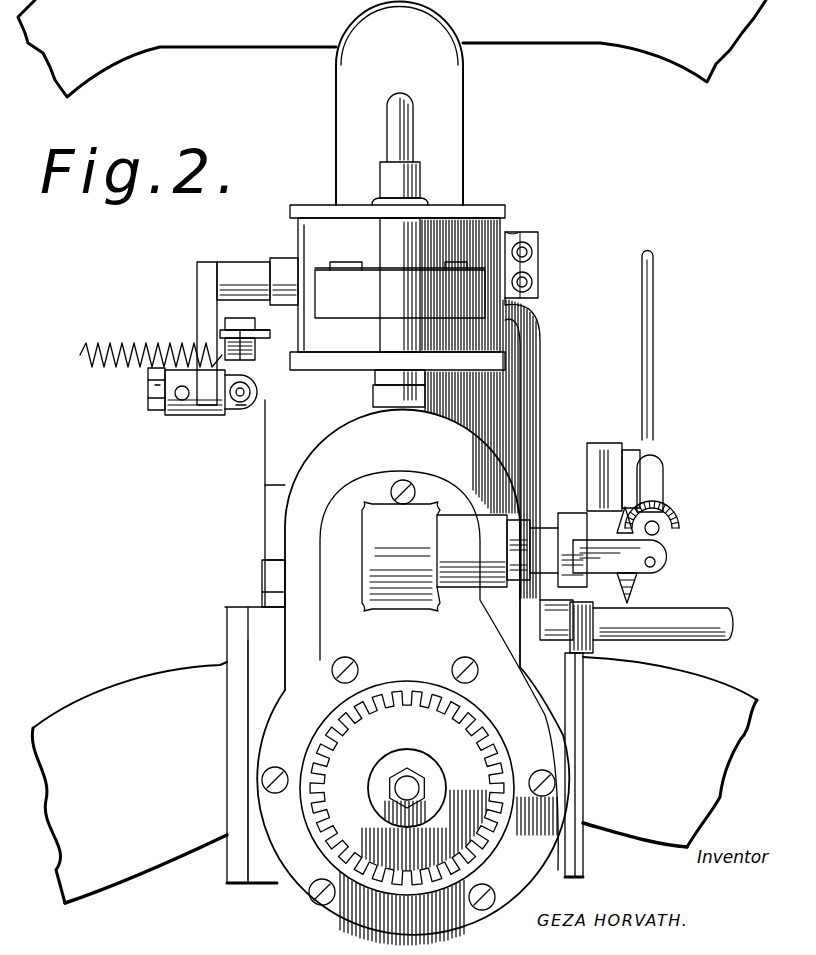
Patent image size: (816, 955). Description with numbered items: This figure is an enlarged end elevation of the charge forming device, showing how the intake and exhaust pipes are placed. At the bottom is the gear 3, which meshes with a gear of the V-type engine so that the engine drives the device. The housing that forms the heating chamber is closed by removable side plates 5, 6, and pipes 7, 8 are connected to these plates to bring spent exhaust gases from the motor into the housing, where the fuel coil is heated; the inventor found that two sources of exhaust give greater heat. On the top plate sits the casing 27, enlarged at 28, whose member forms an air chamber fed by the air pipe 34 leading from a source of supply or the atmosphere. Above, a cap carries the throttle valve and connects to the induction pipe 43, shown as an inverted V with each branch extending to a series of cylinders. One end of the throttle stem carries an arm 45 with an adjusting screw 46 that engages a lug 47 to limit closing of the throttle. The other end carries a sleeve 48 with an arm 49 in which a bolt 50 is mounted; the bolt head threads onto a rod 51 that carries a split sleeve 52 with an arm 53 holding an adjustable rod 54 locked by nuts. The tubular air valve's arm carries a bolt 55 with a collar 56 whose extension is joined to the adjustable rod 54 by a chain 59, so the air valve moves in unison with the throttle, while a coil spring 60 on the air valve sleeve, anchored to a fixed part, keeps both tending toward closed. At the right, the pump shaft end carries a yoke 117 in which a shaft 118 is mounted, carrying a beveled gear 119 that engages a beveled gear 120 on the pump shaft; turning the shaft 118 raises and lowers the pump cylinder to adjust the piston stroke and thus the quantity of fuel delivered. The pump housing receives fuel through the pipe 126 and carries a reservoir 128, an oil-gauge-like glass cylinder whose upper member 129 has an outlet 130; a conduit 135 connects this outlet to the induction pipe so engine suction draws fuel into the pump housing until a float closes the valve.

The gear 3 is at (463, 753).
The removable side plate 5 is at (232, 876).
The removable side plate 6 is at (577, 860).
The pipe 7 is at (670, 752).
The pipe 8 is at (129, 782).
The casing 27 is at (272, 577).
The enlargement of casing 28 is at (278, 520).
The air pipe 34 is at (273, 738).
The induction pipe 43 is at (399, 103).
The arm 45 is at (542, 255).
The adjusting screw 46 is at (542, 290).
The lug 47 is at (536, 238).
The sleeve 48 is at (232, 278).
The arm 49 is at (207, 305).
The bolt 50 is at (185, 414).
The rod 51 is at (165, 418).
The split sleeve 52 is at (148, 405).
The arm 53 is at (240, 408).
The adjustable rod 54 is at (237, 412).
The bolt 55 is at (260, 346).
The collar 56 is at (220, 338).
The chain 59 is at (258, 358).
The coil spring 60 is at (151, 372).
The yoke 117 is at (625, 555).
The shaft 118 is at (655, 375).
The beveled gear 119 is at (668, 520).
The beveled gear 120 is at (640, 585).
The pipe 126 is at (708, 600).
The reservoir 128 is at (528, 357).
The upper member 129 is at (507, 212).
The outlet 130 is at (422, 175).
The conduit 135 is at (413, 108).